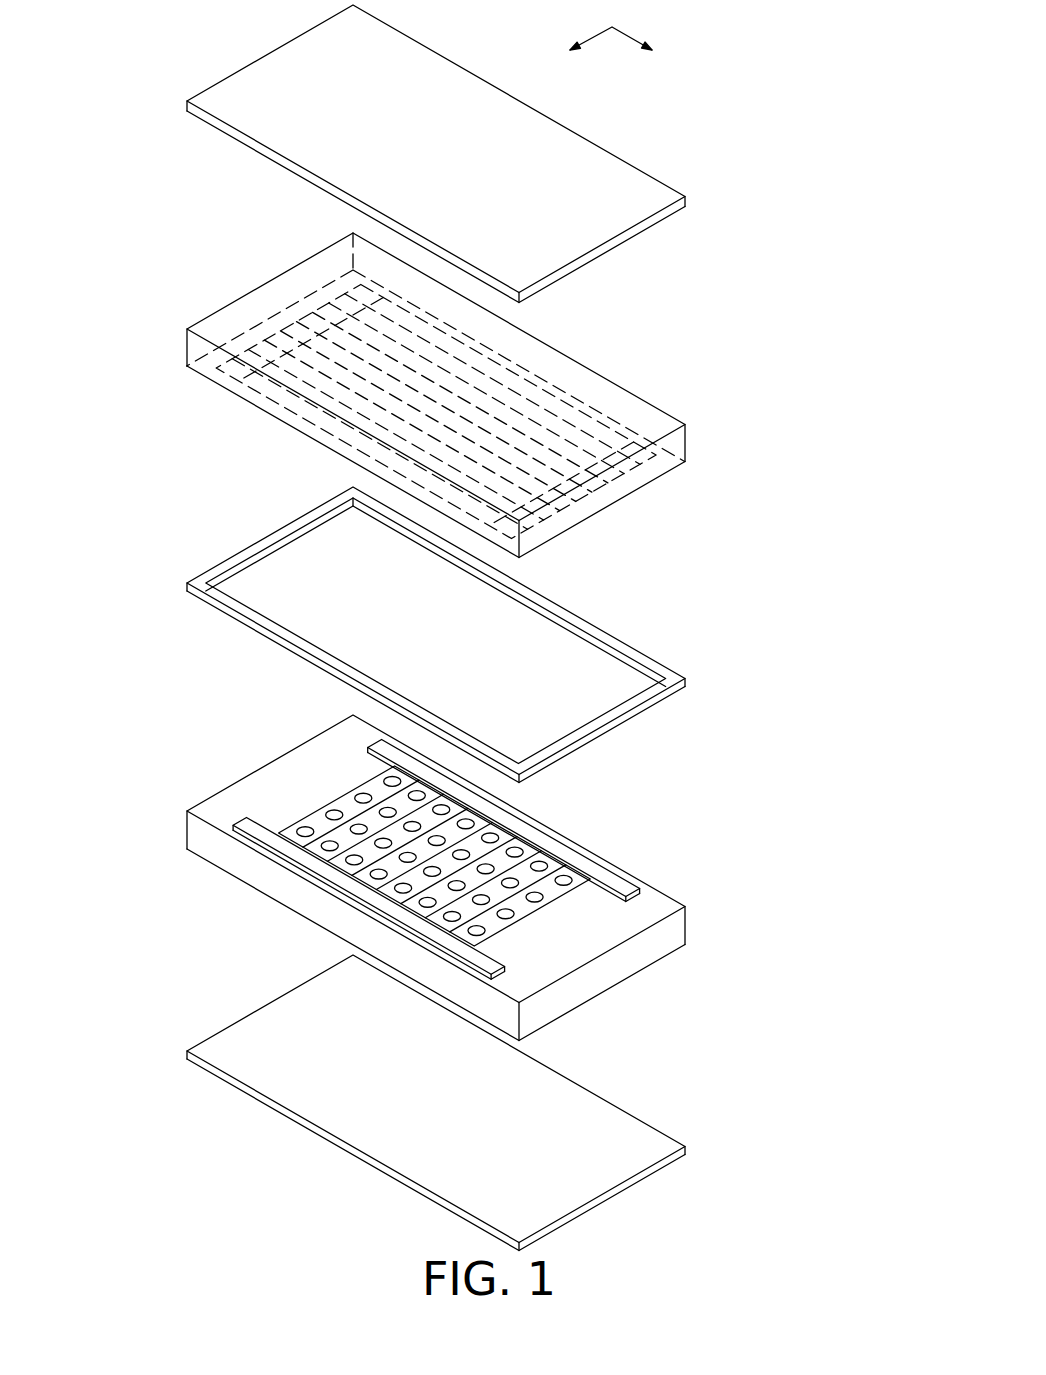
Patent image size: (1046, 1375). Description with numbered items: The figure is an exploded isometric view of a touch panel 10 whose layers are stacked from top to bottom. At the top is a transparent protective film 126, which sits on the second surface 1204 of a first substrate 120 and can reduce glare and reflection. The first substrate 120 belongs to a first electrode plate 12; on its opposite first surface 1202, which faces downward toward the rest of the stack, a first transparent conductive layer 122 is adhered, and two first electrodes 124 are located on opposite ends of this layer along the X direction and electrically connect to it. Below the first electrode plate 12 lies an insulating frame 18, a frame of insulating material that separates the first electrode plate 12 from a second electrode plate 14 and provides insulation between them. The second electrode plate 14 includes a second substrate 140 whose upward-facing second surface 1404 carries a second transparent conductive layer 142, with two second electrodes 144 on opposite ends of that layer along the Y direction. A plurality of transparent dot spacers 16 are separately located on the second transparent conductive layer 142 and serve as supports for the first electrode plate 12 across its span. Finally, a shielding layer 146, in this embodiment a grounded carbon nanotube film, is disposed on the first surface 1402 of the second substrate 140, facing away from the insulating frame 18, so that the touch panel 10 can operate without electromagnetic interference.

The touch panel 10 is at (447, 20).
The first electrode plate 12 is at (677, 400).
The transparent protective film 126 is at (610, 176).
The first substrate 120 is at (490, 395).
The second surface 1204 is at (580, 385).
The first surface 1202 is at (665, 478).
The first transparent conductive layer 122 is at (493, 397).
The first electrodes 124 is at (307, 328).
The insulating frame 18 is at (625, 645).
The second electrode plate 14 is at (593, 1018).
The second substrate 140 is at (463, 878).
The second surface 1404 is at (653, 903).
The first surface 1402 is at (655, 964).
The second electrodes 144 is at (543, 843).
The second transparent conductive layer 142 is at (434, 834).
The transparent dot spacers 16 is at (565, 885).
The shielding layer 146 is at (615, 1133).